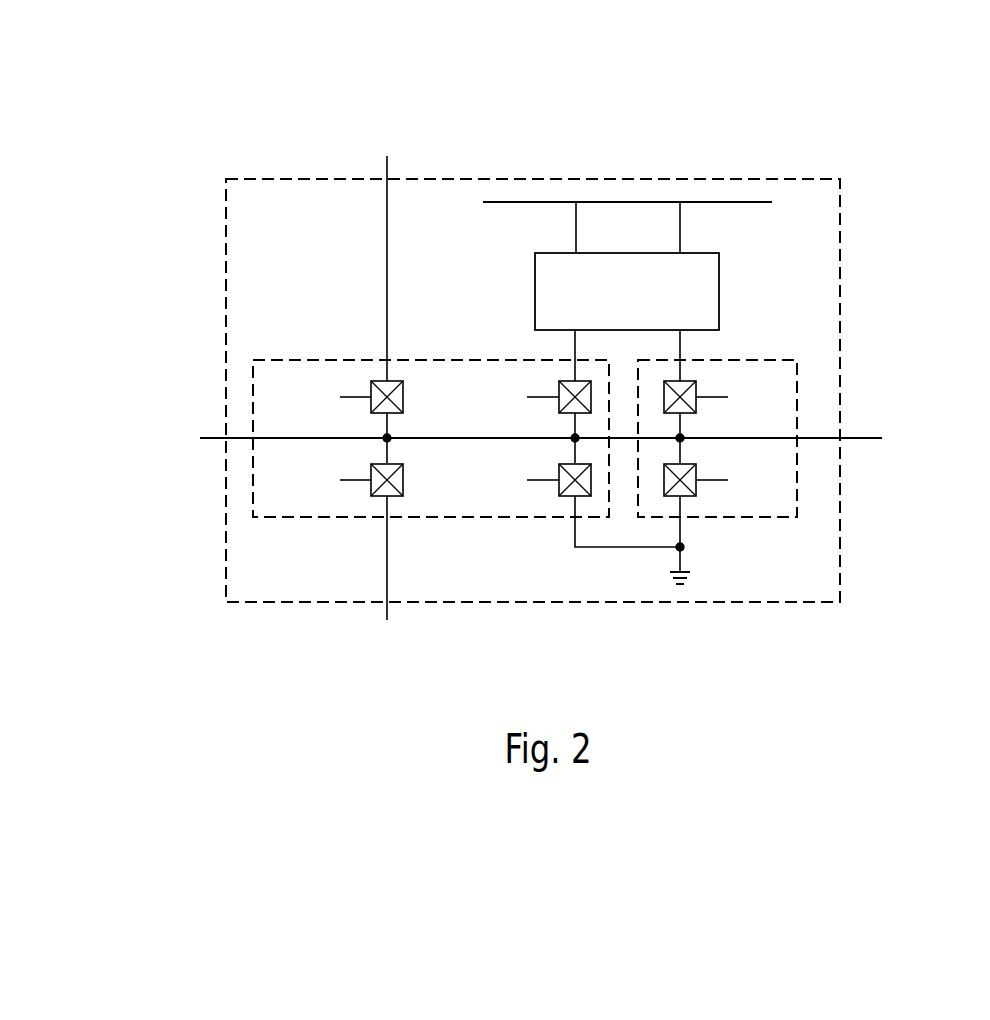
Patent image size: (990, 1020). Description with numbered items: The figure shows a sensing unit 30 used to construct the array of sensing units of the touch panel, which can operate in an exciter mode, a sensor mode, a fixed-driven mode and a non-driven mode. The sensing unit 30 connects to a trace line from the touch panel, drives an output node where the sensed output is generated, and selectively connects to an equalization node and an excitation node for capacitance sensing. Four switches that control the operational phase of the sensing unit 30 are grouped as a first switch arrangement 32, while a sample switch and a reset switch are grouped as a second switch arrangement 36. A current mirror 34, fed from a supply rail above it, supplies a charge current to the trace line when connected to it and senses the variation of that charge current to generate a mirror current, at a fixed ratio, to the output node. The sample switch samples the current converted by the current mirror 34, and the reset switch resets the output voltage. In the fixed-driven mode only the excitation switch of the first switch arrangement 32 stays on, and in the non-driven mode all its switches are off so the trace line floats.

The sensing unit 30 is at (533, 389).
The first switch arrangement 32 is at (467, 358).
The current mirror 34 is at (719, 290).
The second switch arrangement 36 is at (735, 518).